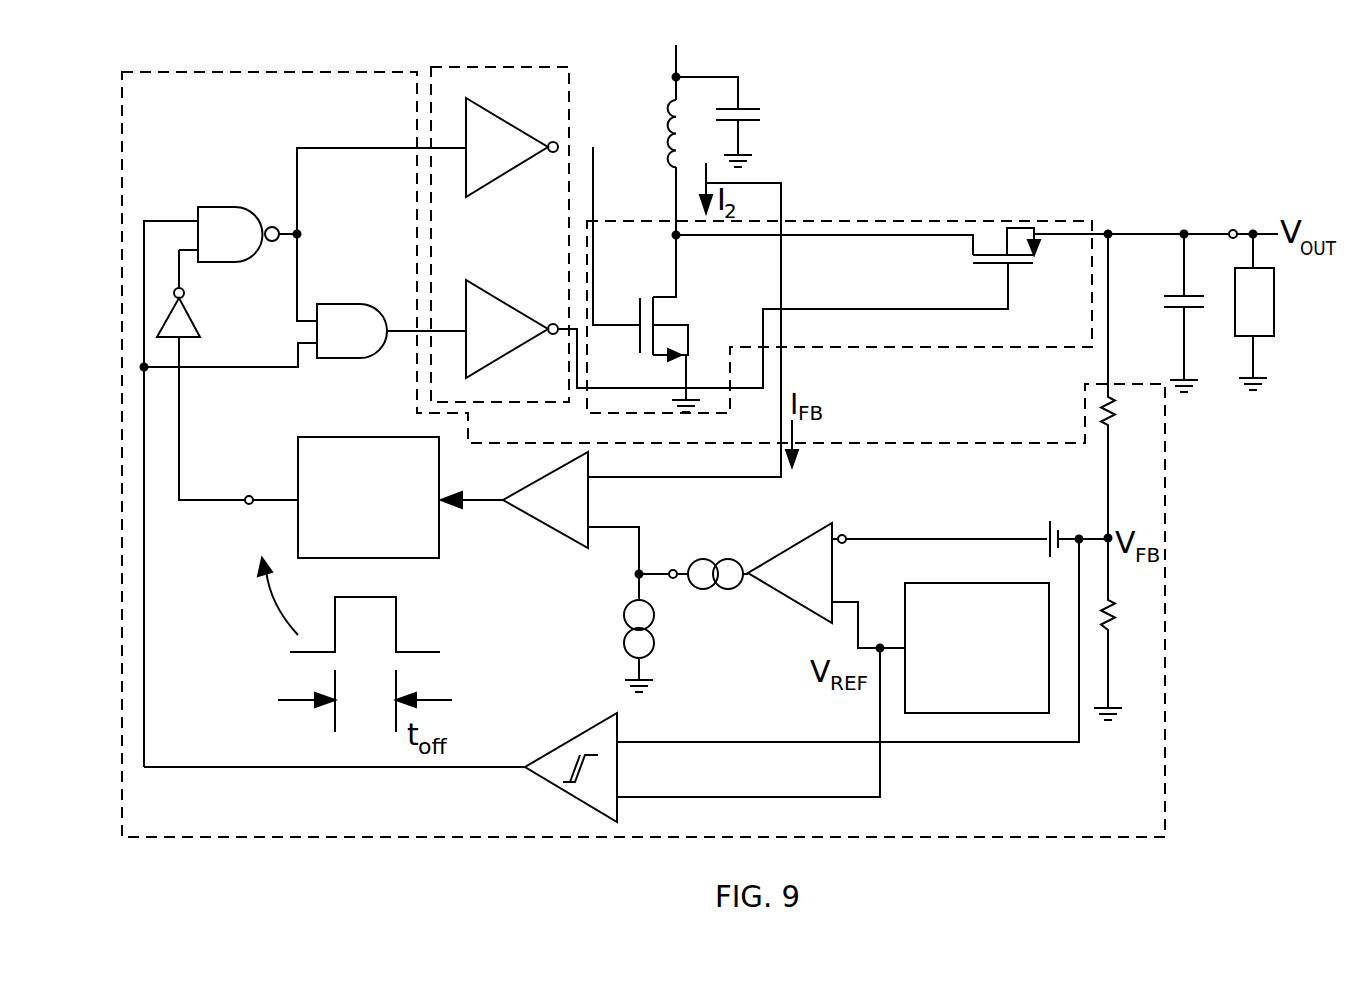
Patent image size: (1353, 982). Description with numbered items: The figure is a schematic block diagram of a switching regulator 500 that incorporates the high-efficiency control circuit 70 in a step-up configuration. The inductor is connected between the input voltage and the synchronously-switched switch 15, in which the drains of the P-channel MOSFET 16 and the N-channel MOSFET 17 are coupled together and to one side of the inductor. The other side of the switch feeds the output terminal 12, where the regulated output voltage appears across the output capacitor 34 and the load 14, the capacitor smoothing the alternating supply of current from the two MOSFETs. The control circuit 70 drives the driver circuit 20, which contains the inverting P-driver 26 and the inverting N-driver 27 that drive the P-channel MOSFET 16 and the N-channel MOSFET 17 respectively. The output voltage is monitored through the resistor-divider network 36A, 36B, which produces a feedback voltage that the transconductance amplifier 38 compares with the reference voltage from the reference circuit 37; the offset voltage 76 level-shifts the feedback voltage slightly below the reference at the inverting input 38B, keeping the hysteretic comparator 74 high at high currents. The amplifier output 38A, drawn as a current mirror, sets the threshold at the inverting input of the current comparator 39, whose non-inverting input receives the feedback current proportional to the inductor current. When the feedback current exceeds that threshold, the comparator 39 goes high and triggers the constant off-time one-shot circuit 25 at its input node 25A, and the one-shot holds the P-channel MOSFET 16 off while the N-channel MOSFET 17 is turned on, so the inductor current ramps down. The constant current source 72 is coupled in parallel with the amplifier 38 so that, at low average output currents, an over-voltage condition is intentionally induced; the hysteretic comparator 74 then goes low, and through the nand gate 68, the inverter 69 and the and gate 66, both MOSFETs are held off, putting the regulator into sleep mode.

The switching regulator 500 is at (855, 155).
The control circuit 70 is at (1165, 578).
The driver circuit 20 is at (462, 67).
The inverting N-driver 27 is at (492, 183).
The inverting P-driver 26 is at (508, 300).
The NAND gate 68 is at (215, 207).
The AND gate 66 is at (339, 304).
The inverter 69 is at (195, 318).
The one-shot circuit 25 is at (370, 558).
The one-shot input node 25A is at (245, 505).
The current comparator 39 is at (555, 535).
The transconductance amplifier 38 is at (800, 545).
The output of transconductance amplifier 38A is at (673, 570).
The amplifier inverting input node 38B is at (845, 534).
The offset voltage 76 is at (1045, 533).
The reference circuit 37 is at (990, 583).
The hysteretic comparator 74 is at (560, 736).
The constant current source 72 is at (660, 650).
The N-channel MOSFET 17 is at (662, 360).
The P-channel MOSFET 16 is at (973, 247).
The synchronously-switched switch 15 is at (968, 221).
The output terminal 12 is at (1233, 230).
The output capacitor 34 is at (1178, 296).
The load 14 is at (1268, 338).
The resistor R1 of resistor-divider network 36A is at (1112, 425).
The resistor R2 of resistor-divider network 36B is at (1112, 630).